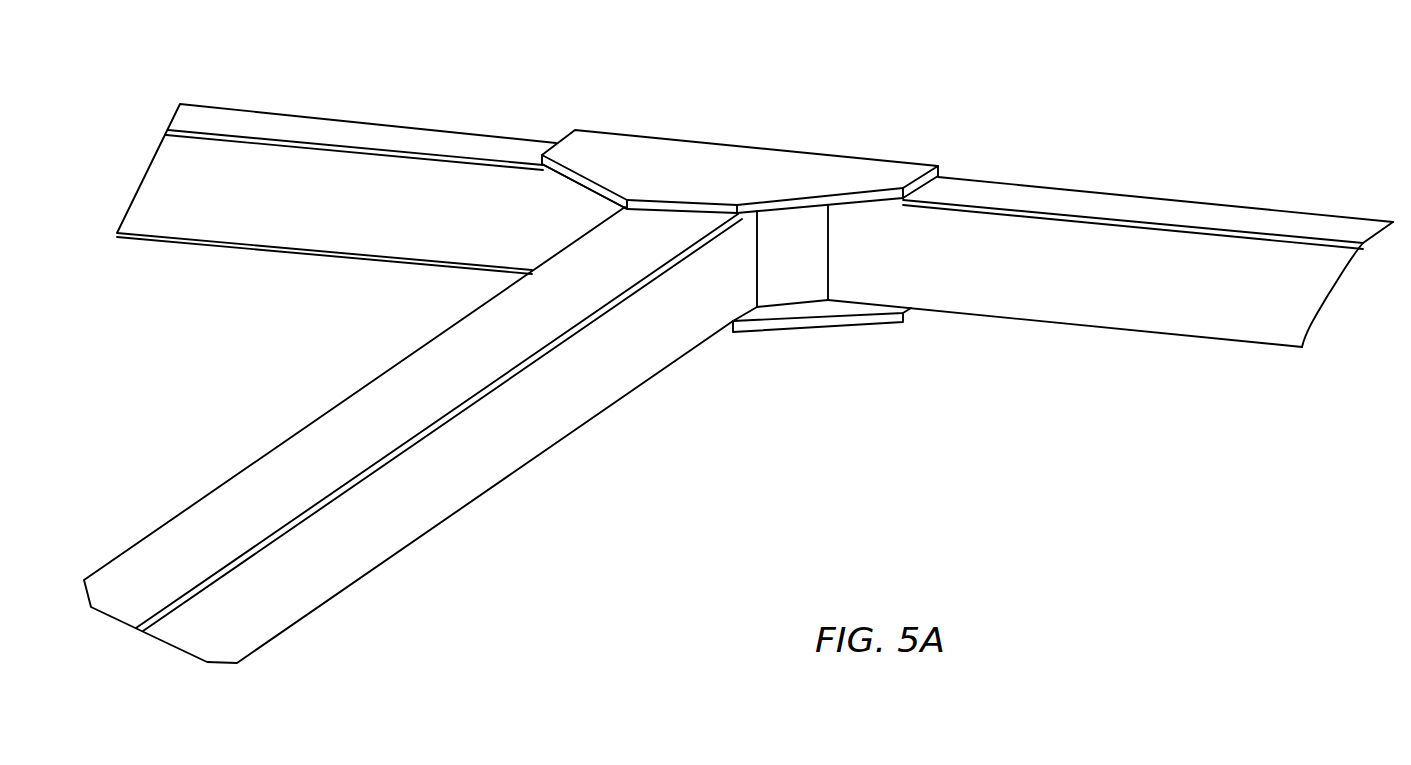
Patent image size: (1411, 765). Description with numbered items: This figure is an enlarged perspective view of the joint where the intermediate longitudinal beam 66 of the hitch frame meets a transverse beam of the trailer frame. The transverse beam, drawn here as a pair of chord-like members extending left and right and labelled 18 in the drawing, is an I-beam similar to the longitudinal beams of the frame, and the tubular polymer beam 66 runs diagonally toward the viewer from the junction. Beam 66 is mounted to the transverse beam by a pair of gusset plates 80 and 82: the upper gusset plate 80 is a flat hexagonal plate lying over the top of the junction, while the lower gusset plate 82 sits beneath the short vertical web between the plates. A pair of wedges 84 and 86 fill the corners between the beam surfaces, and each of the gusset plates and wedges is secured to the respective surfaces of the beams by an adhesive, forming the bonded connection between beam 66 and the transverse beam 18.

The frame beam 18 is at (507, 127).
The longitudinal beam 66 is at (490, 463).
The gusset plate 80 is at (762, 175).
The gusset plate 82 is at (737, 337).
The wedge 84 is at (789, 280).
The wedge 86 is at (618, 207).